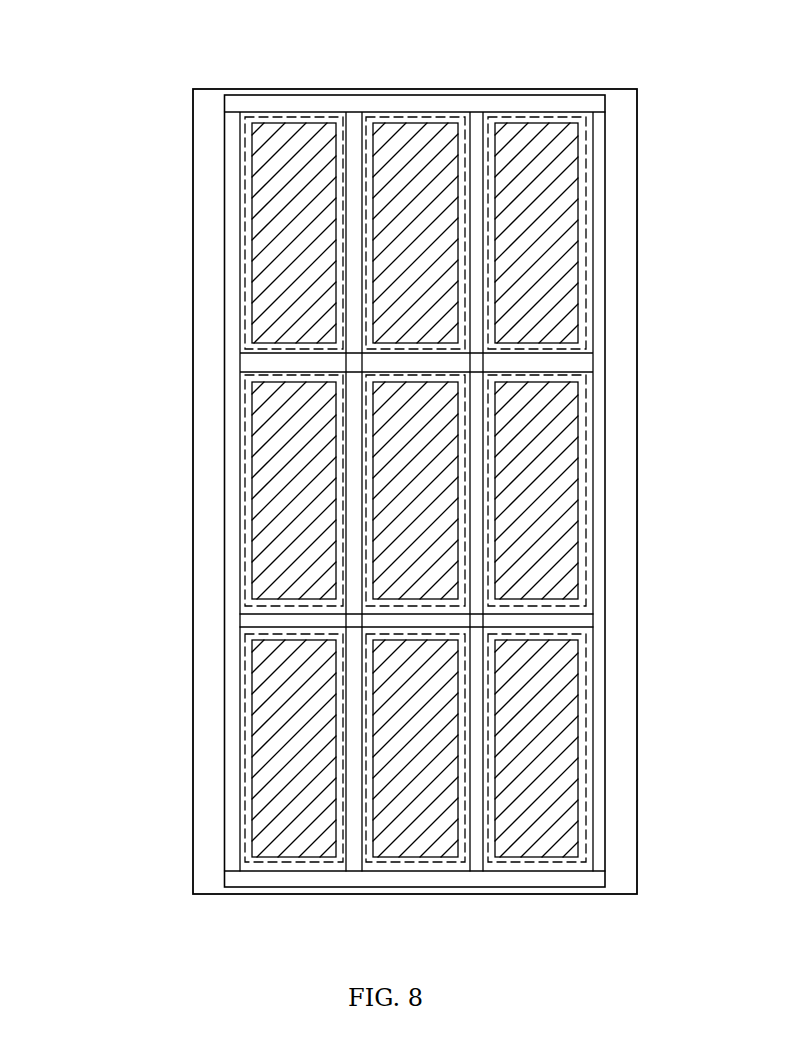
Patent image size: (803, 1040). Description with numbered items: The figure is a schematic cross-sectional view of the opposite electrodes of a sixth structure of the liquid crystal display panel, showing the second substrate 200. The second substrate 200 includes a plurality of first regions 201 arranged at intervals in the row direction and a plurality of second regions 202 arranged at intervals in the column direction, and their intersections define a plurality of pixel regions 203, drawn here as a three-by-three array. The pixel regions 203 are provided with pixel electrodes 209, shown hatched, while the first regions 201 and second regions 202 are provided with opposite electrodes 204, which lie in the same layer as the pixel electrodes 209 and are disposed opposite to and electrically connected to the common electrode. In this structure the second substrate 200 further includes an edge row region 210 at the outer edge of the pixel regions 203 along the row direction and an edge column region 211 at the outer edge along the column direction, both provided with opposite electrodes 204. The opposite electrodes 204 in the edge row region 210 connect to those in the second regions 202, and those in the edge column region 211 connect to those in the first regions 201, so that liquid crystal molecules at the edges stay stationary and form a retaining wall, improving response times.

The second substrate 200 is at (215, 235).
The first regions 201 is at (243, 628).
The second regions 202 is at (365, 120).
The pixel regions 203 is at (245, 487).
The opposite electrodes 204 is at (235, 137).
The pixel electrodes 209 is at (293, 180).
The edge row region 210 is at (233, 870).
The edge column region 211 is at (243, 120).